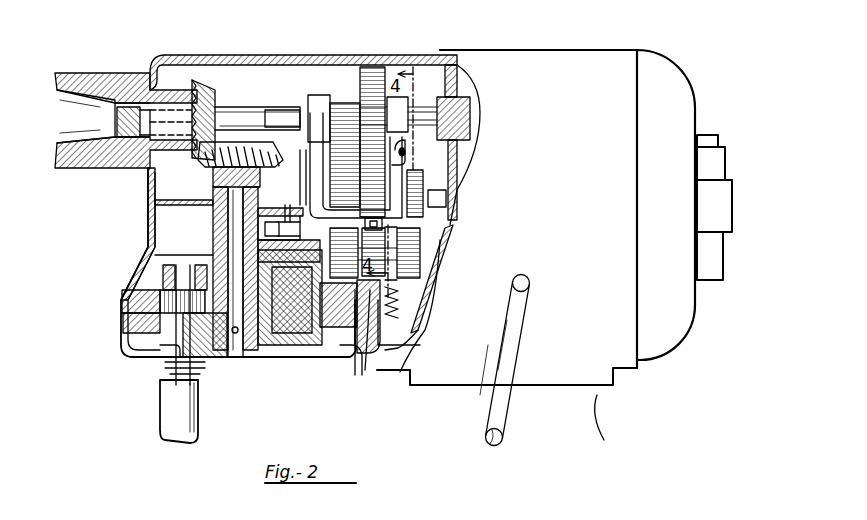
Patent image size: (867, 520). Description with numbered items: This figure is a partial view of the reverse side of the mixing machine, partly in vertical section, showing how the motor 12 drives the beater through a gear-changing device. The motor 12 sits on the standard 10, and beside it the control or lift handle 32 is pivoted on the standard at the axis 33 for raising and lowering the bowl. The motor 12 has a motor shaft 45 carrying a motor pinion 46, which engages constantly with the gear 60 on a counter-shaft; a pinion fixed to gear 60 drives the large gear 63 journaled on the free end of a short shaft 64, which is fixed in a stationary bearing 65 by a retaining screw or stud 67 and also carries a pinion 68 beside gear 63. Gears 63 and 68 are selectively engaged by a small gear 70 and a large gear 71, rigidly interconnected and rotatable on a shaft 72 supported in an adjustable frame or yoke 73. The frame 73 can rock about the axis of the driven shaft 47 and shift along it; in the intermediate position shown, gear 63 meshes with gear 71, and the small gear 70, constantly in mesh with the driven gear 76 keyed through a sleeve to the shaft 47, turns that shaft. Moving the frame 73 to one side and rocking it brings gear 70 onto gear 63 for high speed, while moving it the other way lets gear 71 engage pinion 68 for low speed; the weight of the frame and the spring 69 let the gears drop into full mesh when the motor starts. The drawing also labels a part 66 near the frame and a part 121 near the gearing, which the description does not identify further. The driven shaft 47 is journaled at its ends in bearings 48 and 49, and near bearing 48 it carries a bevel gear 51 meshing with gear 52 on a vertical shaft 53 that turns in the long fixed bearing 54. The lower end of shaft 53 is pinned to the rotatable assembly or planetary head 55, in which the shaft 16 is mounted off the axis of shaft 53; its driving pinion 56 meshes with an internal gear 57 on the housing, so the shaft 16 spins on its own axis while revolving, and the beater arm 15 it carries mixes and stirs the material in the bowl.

The standard 10 is at (602, 420).
The motor 12 is at (620, 93).
The beater arm 15 is at (165, 398).
The shaft 16 is at (160, 365).
The control or lift handle 32 is at (529, 292).
The pivot axis 33 is at (503, 433).
The motor shaft 45 is at (440, 200).
The motor pinion 46 is at (452, 224).
The driven shaft 47 is at (237, 115).
The bearing 48 is at (157, 103).
The bearing 49 is at (440, 97).
The bevel gear 51 is at (192, 160).
The gear 52 is at (208, 172).
The vertical shaft 53 is at (233, 245).
The long fixed bearing 54 is at (215, 221).
The rotatable assembly or planetary head 55 is at (273, 350).
The driving pinion 56 is at (160, 288).
The internal gear 57 is at (122, 305).
The gear 60 is at (430, 302).
The gear 63 is at (347, 360).
The short shaft 64 is at (300, 222).
The stationary bearing 65 is at (280, 237).
The shift fork 66 is at (300, 165).
The retaining screw or stud 67 is at (290, 258).
The pinion 68 is at (415, 322).
The spring 69 is at (400, 347).
The small gear 70 is at (420, 127).
The large gear 71 is at (340, 107).
The shaft 72 is at (417, 157).
The adjustable frame or yoke 73 is at (310, 148).
The driven gear 76 is at (368, 72).
The drive gear 121 is at (410, 238).